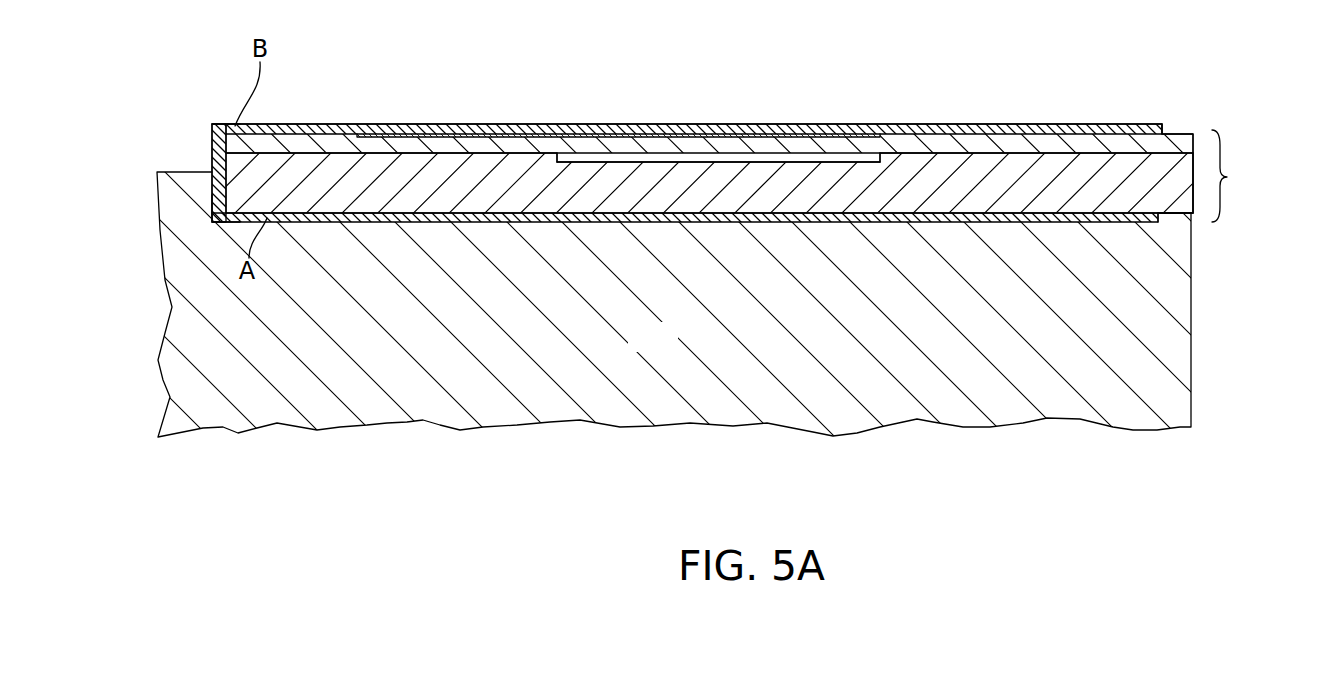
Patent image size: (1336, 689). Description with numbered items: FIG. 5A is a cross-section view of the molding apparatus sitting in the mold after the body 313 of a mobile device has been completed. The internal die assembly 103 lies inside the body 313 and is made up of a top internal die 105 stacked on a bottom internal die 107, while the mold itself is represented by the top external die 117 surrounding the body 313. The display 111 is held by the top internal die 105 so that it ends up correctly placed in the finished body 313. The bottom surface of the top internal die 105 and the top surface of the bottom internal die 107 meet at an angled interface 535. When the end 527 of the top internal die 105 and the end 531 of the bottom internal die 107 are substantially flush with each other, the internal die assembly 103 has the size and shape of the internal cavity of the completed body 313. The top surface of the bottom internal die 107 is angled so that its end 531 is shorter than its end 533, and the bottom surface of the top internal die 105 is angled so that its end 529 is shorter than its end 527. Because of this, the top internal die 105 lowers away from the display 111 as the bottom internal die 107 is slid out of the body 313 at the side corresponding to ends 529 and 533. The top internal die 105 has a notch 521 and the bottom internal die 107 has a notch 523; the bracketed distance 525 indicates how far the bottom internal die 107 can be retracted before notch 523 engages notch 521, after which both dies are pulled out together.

The internal die assembly 103 is at (746, 173).
The top internal die 105 is at (1165, 145).
The bottom internal die 107 is at (957, 194).
The display 111 is at (712, 124).
The top external die 117 is at (631, 349).
The body 313 is at (212, 124).
The notch 521 is at (883, 130).
The notch 523 is at (560, 160).
The recessed region 525 is at (557, 78).
The end 527 is at (212, 163).
The end 529 is at (1187, 140).
The end 531 is at (220, 198).
The end 533 is at (1187, 192).
The interface 535 is at (413, 153).